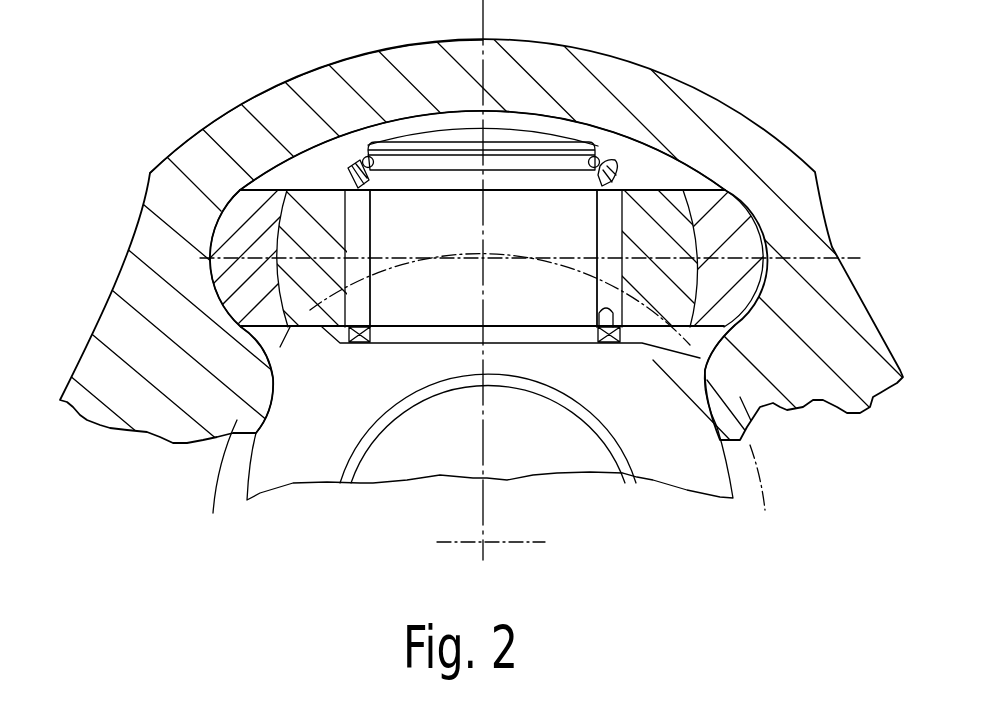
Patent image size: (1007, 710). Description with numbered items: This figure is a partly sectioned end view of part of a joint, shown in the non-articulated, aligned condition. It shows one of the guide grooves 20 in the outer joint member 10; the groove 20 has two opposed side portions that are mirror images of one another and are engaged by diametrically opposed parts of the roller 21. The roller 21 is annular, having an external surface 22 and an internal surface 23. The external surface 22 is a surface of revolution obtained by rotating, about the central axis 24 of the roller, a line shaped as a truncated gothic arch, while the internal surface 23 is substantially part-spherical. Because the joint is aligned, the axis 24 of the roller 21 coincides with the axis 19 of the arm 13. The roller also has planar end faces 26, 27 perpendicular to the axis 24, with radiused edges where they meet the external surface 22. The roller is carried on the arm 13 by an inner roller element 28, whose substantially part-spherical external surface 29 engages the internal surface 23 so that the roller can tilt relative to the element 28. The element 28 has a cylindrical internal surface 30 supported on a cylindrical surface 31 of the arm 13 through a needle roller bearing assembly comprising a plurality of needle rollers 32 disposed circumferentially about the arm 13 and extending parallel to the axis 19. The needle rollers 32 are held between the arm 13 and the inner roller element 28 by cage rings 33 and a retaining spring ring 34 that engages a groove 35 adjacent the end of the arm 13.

The outer joint member 10 is at (777, 153).
The arm 13 is at (524, 177).
The axis of the arm 19 is at (488, 432).
The guide groove 20 is at (647, 160).
The roller 21 is at (720, 215).
The external surface 22 is at (207, 230).
The internal surface 23 is at (280, 242).
The central axis of the roller 24 is at (485, 456).
The end face 26 is at (265, 173).
The end face 27 is at (208, 437).
The inner roller element 28 is at (738, 115).
The part-spherical external surface 29 is at (713, 280).
The internal surface 30 is at (346, 208).
The cylindrical surface 31 is at (606, 347).
The needle rollers 32 is at (363, 307).
The cage rings 33 is at (348, 160).
The retaining spring ring 34 is at (600, 157).
The groove 35 is at (556, 150).